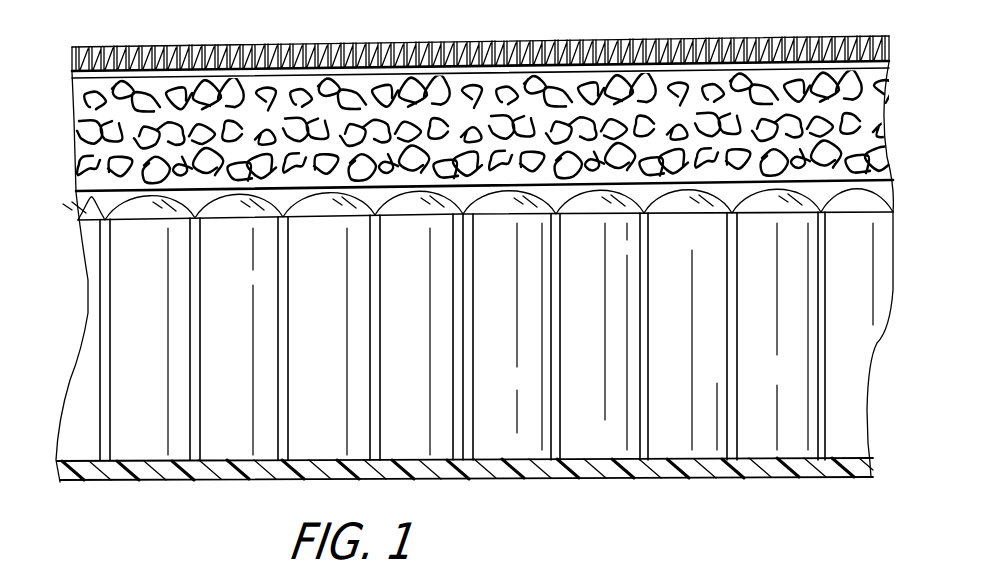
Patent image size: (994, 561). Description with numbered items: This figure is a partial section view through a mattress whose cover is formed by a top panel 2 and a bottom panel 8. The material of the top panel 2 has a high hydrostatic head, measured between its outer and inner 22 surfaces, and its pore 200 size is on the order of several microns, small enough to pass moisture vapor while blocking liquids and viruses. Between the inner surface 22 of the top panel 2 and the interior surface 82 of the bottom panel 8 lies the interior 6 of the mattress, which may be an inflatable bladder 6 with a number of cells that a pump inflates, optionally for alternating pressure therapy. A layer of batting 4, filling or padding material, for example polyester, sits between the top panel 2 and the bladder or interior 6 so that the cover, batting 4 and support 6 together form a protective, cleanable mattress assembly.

The top panel 2 is at (416, 42).
The pore 200 is at (600, 40).
The inner surface 22 is at (221, 72).
The batting 4 is at (77, 135).
The interior 6 is at (148, 317).
The interior surface 82 is at (557, 452).
The bottom panel 8 is at (227, 483).